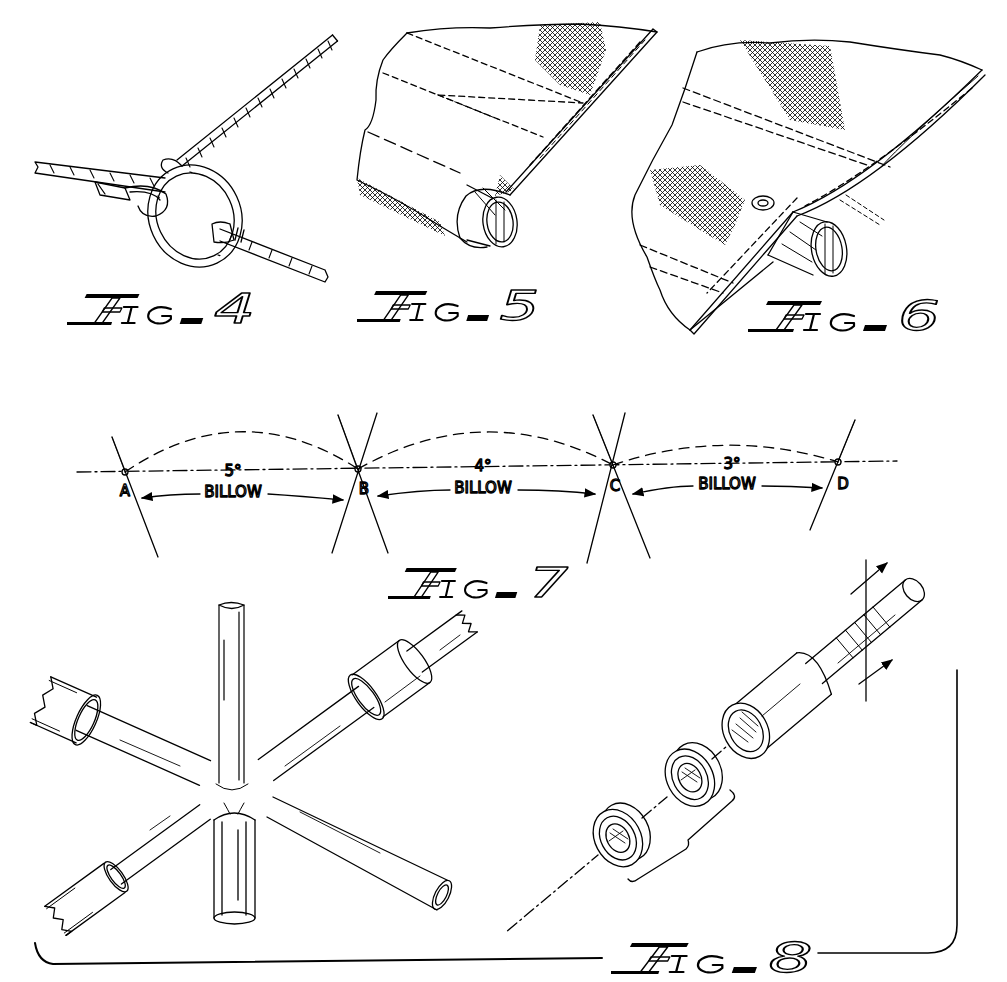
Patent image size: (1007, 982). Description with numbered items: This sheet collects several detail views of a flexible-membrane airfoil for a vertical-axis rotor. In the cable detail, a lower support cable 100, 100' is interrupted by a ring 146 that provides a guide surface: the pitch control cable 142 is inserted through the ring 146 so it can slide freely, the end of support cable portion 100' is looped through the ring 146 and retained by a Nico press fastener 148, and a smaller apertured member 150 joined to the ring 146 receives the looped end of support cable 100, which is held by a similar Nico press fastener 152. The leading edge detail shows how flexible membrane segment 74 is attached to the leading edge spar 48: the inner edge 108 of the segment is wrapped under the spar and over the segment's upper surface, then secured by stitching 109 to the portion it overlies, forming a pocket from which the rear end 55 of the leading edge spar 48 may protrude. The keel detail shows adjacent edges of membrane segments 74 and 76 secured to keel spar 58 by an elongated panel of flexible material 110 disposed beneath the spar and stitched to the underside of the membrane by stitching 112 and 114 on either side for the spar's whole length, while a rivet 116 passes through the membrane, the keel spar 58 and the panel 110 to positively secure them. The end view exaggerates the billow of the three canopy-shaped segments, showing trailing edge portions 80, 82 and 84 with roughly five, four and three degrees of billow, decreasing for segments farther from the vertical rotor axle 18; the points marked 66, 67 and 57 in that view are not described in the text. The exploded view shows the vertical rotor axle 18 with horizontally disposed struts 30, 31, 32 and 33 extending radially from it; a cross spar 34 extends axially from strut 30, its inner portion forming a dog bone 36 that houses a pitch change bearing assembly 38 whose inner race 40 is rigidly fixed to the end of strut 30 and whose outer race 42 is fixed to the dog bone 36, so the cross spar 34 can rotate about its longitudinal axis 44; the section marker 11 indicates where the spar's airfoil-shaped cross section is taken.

In FIG. 4, the pitch control cable 142 is at (262, 98).
In FIG. 4, the support cable 100 is at (100, 160).
In FIG. 4, the support cable portion 100' is at (278, 255).
In FIG. 4, the ring 146 is at (196, 258).
In FIG. 4, the Nico press fastener 148 is at (256, 232).
In FIG. 4, the apertured member 150 is at (140, 216).
In FIG. 4, the Nico press fastener 152 is at (102, 207).
In FIG. 5, the flexible membrane segment 74 is at (496, 50).
In FIG. 6, the flexible membrane segment 74 is at (670, 293).
In FIG. 5, the inner edge 108 is at (500, 70).
In FIG. 5, the stitching 109 is at (416, 85).
In FIG. 5, the leading edge spar 48 is at (490, 192).
In FIG. 5, the rear end 55 is at (517, 218).
In FIG. 7, the rear end 55 is at (121, 474).
In FIG. 6, the stitching 114 is at (736, 112).
In FIG. 6, the rivet 116 is at (765, 195).
In FIG. 6, the keel spar 58 is at (793, 218).
In FIG. 6, the elongated panel of flexible material 110 is at (856, 211).
In FIG. 6, the rib end ferrule 66 is at (848, 250).
In FIG. 7, the rib end ferrule 66 is at (368, 462).
In FIG. 6, the flexible membrane segment 76 is at (920, 100).
In FIG. 6, the stitching 112 is at (690, 262).
In FIG. 7, the trailing edge portion 80 is at (246, 429).
In FIG. 7, the trailing edge portion 82 is at (500, 432).
In FIG. 7, the trailing edge portion 84 is at (743, 440).
In FIG. 7, the rib end point 67 is at (622, 462).
In FIG. 7, the rib end point 57 is at (842, 466).
In FIG. 8, the vertical rotor axle 18 is at (250, 868).
In FIG. 8, the strut 30 is at (317, 817).
In FIG. 8, the strut 31 is at (298, 727).
In FIG. 8, the strut 32 is at (141, 727).
In FIG. 8, the strut 33 is at (163, 823).
In FIG. 8, the cross spar 34 is at (900, 604).
In FIG. 8, the dog bone 36 is at (824, 644).
In FIG. 8, the pitch change bearing assembly 38 is at (692, 847).
In FIG. 8, the inner race 40 is at (602, 812).
In FIG. 8, the outer race 42 is at (674, 755).
In FIG. 8, the longitudinal axis 44 is at (565, 878).
In FIG. 8, the section line 11 is at (841, 605).